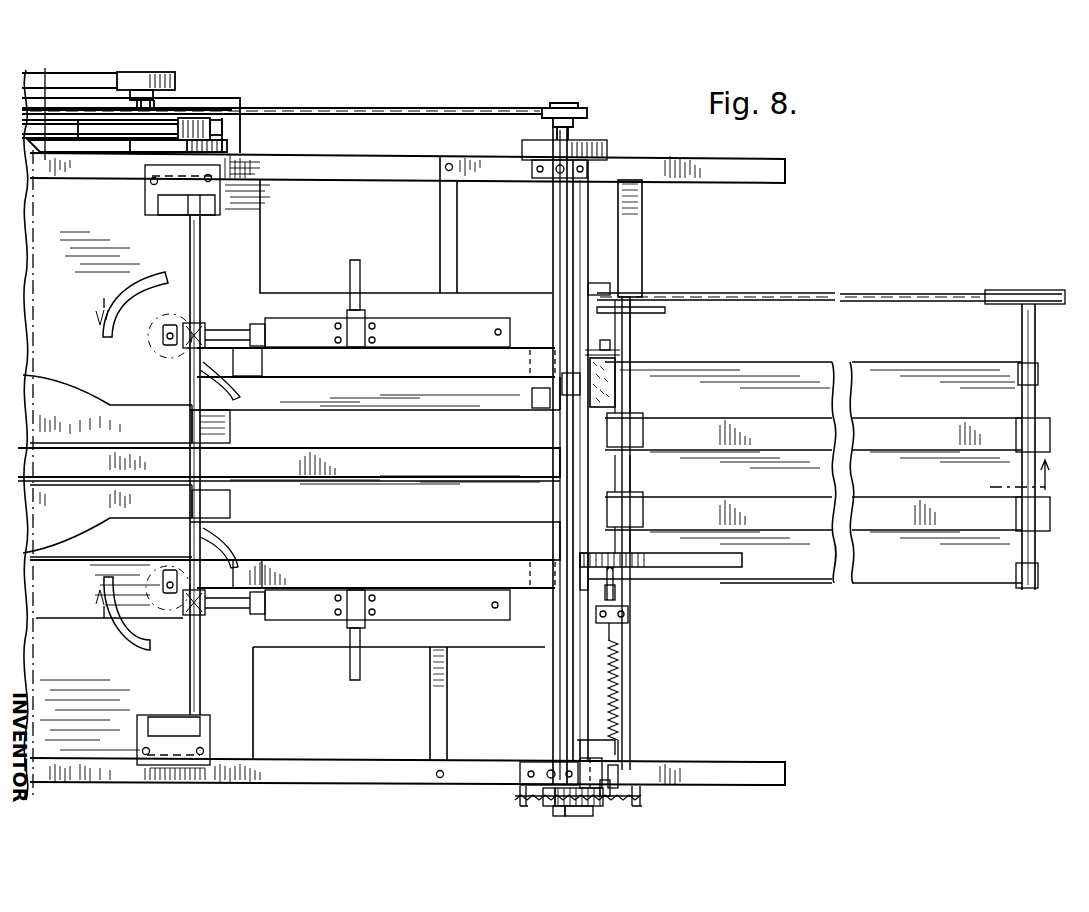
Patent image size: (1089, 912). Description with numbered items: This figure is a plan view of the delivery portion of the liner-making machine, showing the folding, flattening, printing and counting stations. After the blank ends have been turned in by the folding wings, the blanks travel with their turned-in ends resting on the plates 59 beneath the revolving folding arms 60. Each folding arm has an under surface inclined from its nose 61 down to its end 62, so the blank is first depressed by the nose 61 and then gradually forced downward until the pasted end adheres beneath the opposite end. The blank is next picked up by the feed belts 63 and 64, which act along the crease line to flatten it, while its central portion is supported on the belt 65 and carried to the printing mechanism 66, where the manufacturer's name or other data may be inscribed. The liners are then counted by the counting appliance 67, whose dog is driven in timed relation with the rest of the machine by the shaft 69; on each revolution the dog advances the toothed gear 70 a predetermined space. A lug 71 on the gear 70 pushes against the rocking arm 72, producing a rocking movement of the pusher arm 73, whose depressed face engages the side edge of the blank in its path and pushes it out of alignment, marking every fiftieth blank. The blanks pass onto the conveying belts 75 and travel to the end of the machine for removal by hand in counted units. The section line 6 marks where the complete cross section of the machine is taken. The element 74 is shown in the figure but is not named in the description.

The plates 59 is at (107, 496).
The revolving folding arms 60 is at (103, 322).
The nose 61 is at (135, 343).
The end 62 is at (158, 280).
The feed belt 63 is at (437, 368).
The feed belt 64 is at (402, 568).
The belt 65 is at (363, 455).
The printing mechanism 66 is at (616, 365).
The counting appliance 67 is at (574, 820).
The shaft 69 is at (552, 716).
The gear 70 is at (612, 800).
The lug 71 is at (615, 792).
The rocking arm 72 is at (618, 780).
The pusher arm 73 is at (620, 690).
The toothed bar 74 is at (614, 580).
The conveying belts 75 is at (936, 472).
The section line 6— 6 is at (1026, 480).